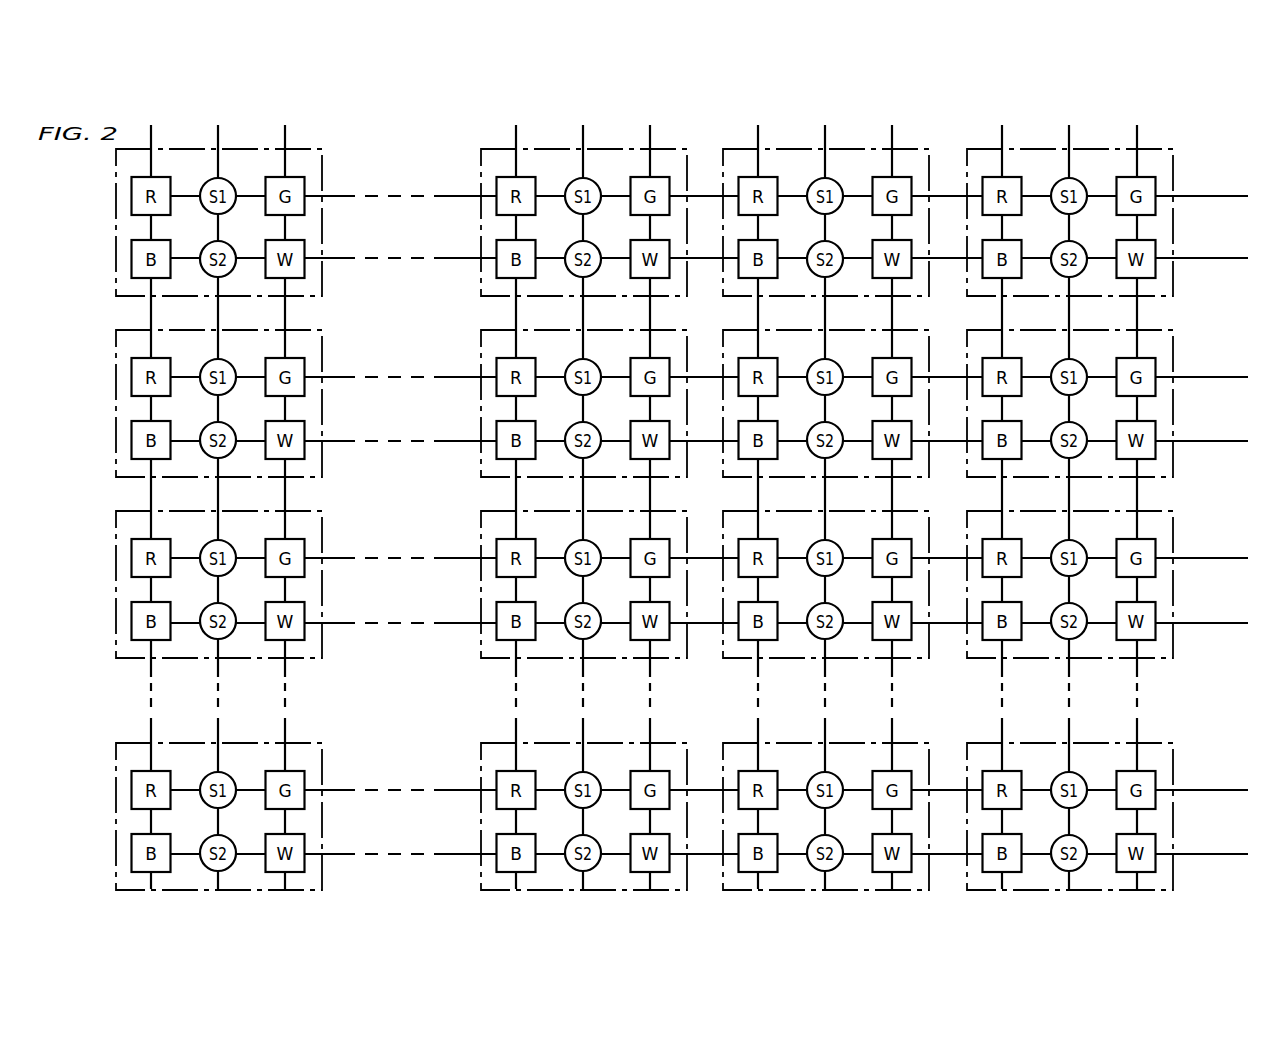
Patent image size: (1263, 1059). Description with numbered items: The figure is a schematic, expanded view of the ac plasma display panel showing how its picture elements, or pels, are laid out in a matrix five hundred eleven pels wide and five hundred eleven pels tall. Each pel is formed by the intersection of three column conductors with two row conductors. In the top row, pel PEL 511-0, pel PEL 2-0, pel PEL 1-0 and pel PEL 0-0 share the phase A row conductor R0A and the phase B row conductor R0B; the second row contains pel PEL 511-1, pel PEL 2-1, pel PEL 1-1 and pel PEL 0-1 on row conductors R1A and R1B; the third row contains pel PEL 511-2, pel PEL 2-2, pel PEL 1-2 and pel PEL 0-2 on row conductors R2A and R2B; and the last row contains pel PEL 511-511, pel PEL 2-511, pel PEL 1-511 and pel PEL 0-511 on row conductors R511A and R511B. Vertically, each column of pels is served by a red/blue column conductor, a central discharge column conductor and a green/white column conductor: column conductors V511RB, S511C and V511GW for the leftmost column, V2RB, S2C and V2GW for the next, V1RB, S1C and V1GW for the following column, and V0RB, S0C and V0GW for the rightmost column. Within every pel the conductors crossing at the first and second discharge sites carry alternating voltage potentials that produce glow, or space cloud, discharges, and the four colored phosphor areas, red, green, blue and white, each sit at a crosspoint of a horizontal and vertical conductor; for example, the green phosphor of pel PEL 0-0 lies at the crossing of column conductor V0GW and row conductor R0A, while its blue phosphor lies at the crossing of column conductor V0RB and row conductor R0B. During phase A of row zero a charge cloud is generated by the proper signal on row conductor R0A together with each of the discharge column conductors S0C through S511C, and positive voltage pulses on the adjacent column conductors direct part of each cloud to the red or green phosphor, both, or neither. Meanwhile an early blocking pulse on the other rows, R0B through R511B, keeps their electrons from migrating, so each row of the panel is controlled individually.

The pel PEL 511-0 is at (320, 281).
The pel PEL 2-0 is at (663, 297).
The pel PEL 1-0 is at (905, 297).
The pel PEL 0-0 is at (1150, 297).
The pel PEL 511-1 is at (320, 463).
The pel PEL 2-1 is at (661, 477).
The pel PEL 1-1 is at (903, 477).
The pel PEL 0-1 is at (1148, 477).
The pel PEL 511-2 is at (320, 645).
The pel PEL 2-2 is at (660, 660).
The pel PEL 1-2 is at (903, 660).
The pel PEL 0-2 is at (1163, 660).
The pel PEL 511-511 is at (317, 741).
The pel PEL 2-511 is at (668, 741).
The pel PEL 1-511 is at (910, 741).
The pel PEL 0-511 is at (1175, 861).
The column conductor V511RB is at (165, 500).
The column conductor S511C is at (239, 507).
The column conductor V511GW is at (313, 507).
The column conductor V2RB is at (537, 507).
The column conductor S2C is at (599, 507).
The column conductor V2GW is at (671, 507).
The column conductor V1RB is at (778, 507).
The column conductor S1C is at (838, 507).
The column conductor V1GW is at (911, 507).
The column conductor V0RB is at (1023, 507).
The column conductor S0C is at (1084, 507).
The column conductor V0GW is at (1158, 507).
The row conductor R0A is at (690, 184).
The row conductor R0B is at (690, 247).
The row conductor R1A is at (690, 366).
The row conductor R1B is at (690, 432).
The row conductor R2A is at (690, 547).
The row conductor R2B is at (690, 612).
The row conductor R511A is at (690, 778).
The row conductor R511B is at (690, 843).